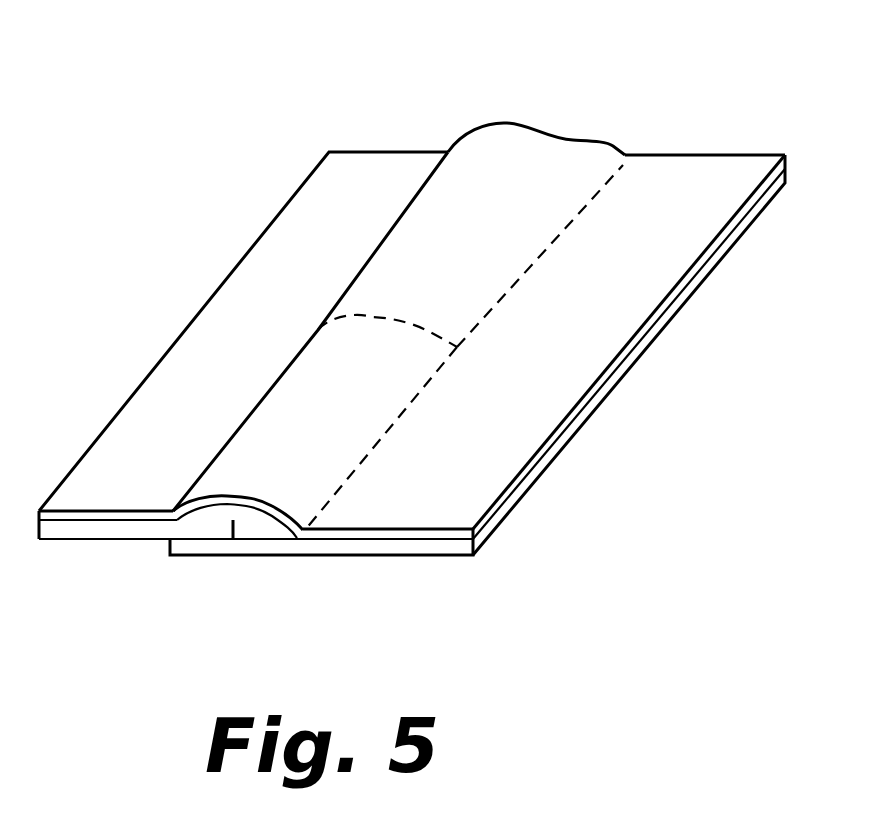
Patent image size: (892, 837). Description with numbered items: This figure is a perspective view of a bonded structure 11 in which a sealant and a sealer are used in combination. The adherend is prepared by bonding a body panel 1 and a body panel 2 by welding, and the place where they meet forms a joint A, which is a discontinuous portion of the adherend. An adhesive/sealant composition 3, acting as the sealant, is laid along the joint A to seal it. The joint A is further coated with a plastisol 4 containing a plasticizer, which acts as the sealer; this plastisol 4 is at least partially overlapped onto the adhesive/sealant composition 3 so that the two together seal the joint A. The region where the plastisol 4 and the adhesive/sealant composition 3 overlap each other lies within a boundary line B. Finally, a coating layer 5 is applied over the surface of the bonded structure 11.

The body panel 1 is at (90, 530).
The body panel 2 is at (437, 547).
The adhesive/sealant composition 3 is at (560, 167).
The plastisol 4 is at (267, 525).
The coating layer 5 is at (690, 167).
The bonded structure 11 is at (236, 118).
The joint A is at (234, 556).
The boundary line B is at (487, 370).